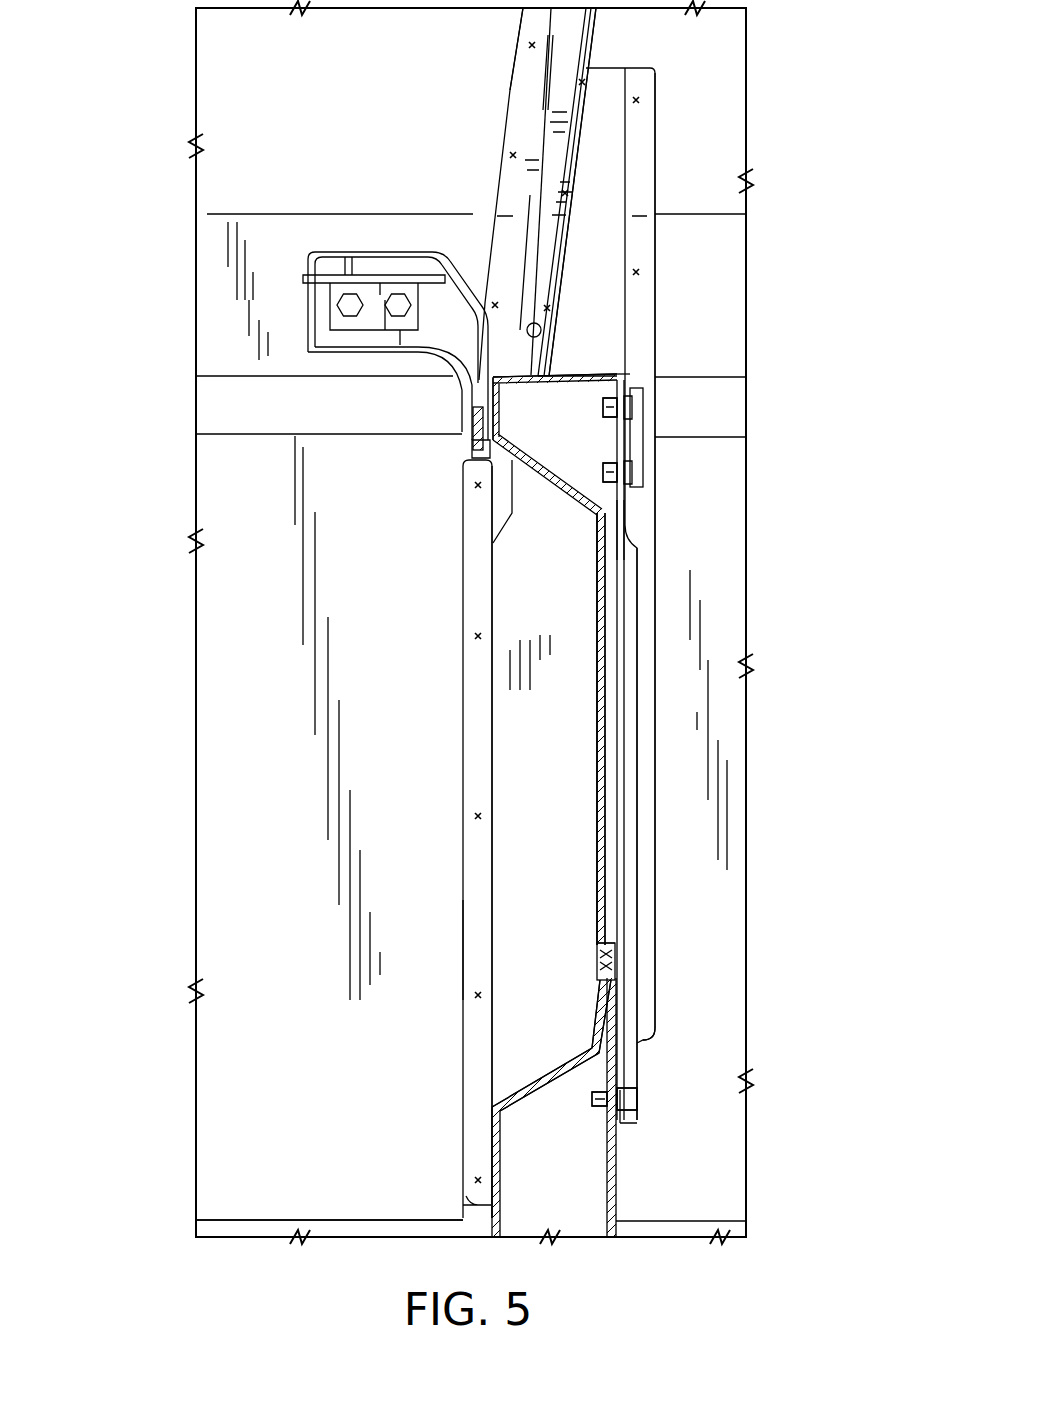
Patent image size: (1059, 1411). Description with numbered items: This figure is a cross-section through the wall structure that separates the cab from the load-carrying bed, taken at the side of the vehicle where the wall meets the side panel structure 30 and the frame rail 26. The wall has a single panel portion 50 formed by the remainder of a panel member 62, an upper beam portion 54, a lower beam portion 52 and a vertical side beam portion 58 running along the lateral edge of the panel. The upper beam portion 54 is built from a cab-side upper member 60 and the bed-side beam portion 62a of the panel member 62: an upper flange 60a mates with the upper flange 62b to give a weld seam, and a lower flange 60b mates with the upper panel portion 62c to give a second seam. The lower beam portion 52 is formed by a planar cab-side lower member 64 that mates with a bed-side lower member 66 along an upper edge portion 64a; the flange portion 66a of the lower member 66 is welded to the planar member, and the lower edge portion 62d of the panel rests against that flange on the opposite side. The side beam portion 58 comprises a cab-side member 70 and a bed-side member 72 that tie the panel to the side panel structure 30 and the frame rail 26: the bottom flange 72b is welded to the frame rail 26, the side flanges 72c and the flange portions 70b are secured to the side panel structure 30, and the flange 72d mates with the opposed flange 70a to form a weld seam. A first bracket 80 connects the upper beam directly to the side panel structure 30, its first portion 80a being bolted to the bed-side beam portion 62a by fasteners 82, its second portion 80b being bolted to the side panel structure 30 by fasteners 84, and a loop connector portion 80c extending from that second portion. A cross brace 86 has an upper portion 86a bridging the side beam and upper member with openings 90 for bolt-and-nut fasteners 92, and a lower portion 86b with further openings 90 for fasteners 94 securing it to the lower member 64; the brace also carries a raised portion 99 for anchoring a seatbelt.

The frame rail 26 is at (288, 1218).
The side panel structure 30 is at (225, 745).
The panel portion 50 is at (597, 794).
The lower beam portion 52 is at (492, 1110).
The upper beam portion 54 is at (604, 371).
The side beam portion 58 is at (496, 700).
The cab-side upper member 60 is at (643, 432).
The upper flange 60a is at (545, 352).
The lower flange 60b is at (630, 540).
The panel member 62 is at (597, 735).
The bed-side beam portion 62a is at (490, 436).
The upper flange 62b is at (545, 326).
The upper panel portion 62c is at (598, 522).
The lower edge portion 62d is at (598, 965).
The cab-side lower member 64 is at (620, 1190).
The upper edge portion 64a is at (614, 955).
The bed-side lower member 66 is at (492, 1138).
The flange portion 66a is at (607, 1007).
The cab-side member 70 is at (612, 238).
The opposed flange 70a is at (565, 247).
The flange portions 70b is at (642, 187).
The bed-side member 72 is at (490, 882).
The bottom flange 72b is at (475, 1205).
The side flanges 72c is at (530, 50).
The flange 72d is at (575, 103).
The first bracket 80 is at (351, 353).
The first portion 80a is at (480, 440).
The second portion 80b is at (323, 306).
The loop connector portion 80c is at (420, 283).
The fasteners 82 is at (472, 418).
The fasteners 84 is at (398, 300).
The cross brace 86 is at (640, 765).
The upper portion 86a is at (645, 432).
The lower portion 86b is at (640, 1078).
The openings 90 is at (612, 432).
The fasteners 92 is at (632, 405).
The fasteners 94 is at (640, 1102).
The raised portion 99 is at (652, 975).